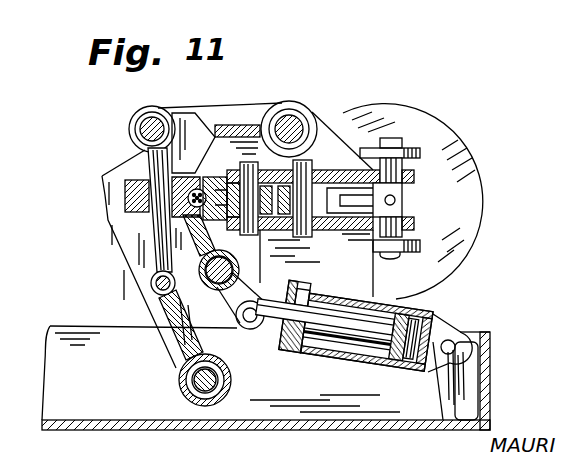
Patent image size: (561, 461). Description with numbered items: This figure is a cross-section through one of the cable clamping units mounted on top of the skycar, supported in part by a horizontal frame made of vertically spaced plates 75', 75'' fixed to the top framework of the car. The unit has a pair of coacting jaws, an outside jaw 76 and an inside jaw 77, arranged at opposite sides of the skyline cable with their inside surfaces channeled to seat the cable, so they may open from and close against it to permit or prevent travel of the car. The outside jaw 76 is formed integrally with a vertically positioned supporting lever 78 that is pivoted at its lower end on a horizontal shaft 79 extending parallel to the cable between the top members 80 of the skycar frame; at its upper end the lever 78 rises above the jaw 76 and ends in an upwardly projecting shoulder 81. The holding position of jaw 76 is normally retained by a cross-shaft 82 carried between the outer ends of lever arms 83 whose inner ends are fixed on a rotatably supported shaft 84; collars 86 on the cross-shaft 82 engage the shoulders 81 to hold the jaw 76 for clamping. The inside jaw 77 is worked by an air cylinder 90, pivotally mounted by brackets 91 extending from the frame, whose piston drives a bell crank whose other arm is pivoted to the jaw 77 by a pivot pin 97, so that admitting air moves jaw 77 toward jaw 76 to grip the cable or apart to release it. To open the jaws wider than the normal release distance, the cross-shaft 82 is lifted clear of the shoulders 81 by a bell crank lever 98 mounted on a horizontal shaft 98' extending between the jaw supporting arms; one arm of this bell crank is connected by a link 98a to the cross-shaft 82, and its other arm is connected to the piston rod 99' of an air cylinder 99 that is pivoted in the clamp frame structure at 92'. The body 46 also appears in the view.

The slide body 46 is at (318, 236).
The plate 75' is at (453, 152).
The plate 75'' is at (469, 208).
The outside jaw 76 is at (175, 212).
The inside jaw 77 is at (190, 247).
The supporting lever 78 is at (107, 215).
The horizontal shaft 79 is at (180, 381).
The top member 80 is at (158, 410).
The shoulder 81 is at (187, 118).
The cross-shaft 82 is at (141, 130).
The lever arm 83 is at (253, 110).
The supporting shaft 84 is at (300, 124).
The collar 86 is at (135, 115).
The air cylinder 90 is at (420, 126).
The bracket 91 is at (420, 152).
The pivot 92' is at (478, 364).
The pivot pin 97 is at (151, 281).
The bell crank lever 98 is at (184, 313).
The horizontal shaft 98' is at (247, 265).
The link 98a is at (150, 162).
The air cylinder 99 is at (367, 323).
The piston rod 99' is at (363, 368).